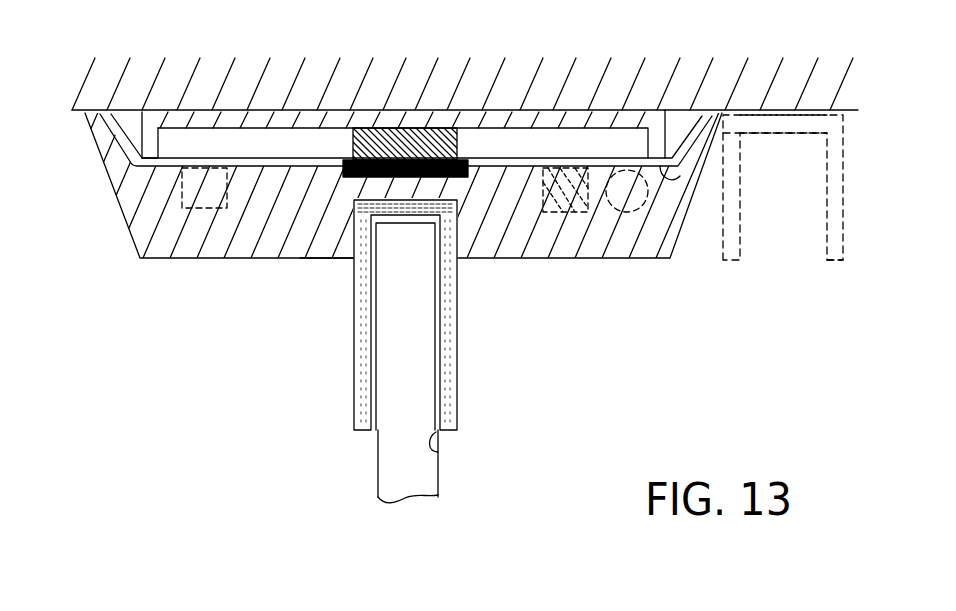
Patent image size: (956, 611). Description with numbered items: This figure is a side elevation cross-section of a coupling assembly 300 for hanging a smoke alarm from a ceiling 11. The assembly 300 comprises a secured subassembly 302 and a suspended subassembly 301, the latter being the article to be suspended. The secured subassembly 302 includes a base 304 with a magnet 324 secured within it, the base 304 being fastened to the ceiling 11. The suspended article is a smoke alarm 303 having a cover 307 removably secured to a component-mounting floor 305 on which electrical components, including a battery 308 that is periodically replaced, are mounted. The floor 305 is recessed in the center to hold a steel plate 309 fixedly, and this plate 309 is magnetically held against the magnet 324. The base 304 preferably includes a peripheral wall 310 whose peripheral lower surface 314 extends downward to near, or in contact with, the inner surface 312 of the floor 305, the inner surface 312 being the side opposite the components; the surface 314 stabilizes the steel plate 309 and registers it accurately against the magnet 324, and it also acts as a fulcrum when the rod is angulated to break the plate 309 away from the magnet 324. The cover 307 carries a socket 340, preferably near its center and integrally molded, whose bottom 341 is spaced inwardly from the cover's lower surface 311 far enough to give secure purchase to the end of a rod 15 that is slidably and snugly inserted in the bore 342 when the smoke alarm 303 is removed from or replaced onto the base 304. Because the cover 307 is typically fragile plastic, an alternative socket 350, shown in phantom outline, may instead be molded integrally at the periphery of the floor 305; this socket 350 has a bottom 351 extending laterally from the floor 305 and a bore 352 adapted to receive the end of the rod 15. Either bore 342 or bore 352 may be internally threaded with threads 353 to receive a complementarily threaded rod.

The ceiling 11 is at (277, 100).
The rod 15 is at (440, 478).
The assembly 300 is at (276, 311).
The suspended subassembly 301 is at (134, 239).
The secured subassembly 302 is at (615, 100).
The smoke alarm 303 is at (687, 218).
The base 304 is at (172, 100).
The component-mounting floor 305 is at (170, 168).
The cover 307 is at (565, 215).
The battery 308 is at (555, 215).
The steel plate 309 is at (345, 250).
The peripheral wall 310 is at (138, 128).
The lower surface 311 is at (173, 240).
The inner surface 312 is at (582, 157).
The peripheral lower surface 314 is at (660, 166).
The magnet 324 is at (458, 136).
The socket 340 is at (355, 365).
The bottom 341 is at (400, 217).
The bore 342 is at (440, 450).
The socket 350 is at (843, 192).
The bottom 351 is at (757, 143).
The bore 352 is at (828, 243).
The threads 353 is at (732, 187).